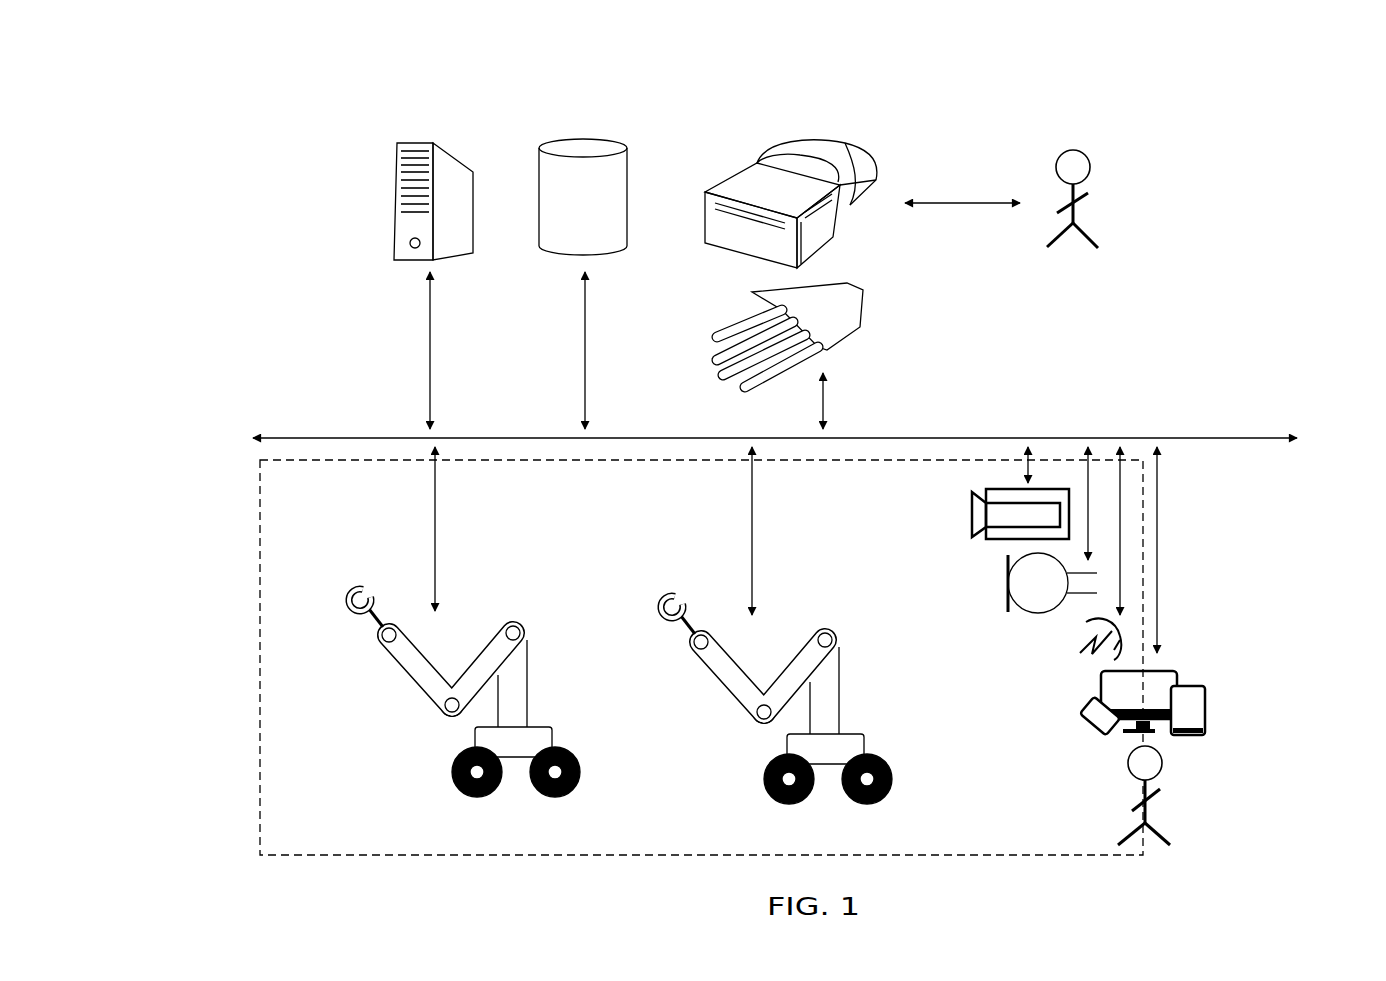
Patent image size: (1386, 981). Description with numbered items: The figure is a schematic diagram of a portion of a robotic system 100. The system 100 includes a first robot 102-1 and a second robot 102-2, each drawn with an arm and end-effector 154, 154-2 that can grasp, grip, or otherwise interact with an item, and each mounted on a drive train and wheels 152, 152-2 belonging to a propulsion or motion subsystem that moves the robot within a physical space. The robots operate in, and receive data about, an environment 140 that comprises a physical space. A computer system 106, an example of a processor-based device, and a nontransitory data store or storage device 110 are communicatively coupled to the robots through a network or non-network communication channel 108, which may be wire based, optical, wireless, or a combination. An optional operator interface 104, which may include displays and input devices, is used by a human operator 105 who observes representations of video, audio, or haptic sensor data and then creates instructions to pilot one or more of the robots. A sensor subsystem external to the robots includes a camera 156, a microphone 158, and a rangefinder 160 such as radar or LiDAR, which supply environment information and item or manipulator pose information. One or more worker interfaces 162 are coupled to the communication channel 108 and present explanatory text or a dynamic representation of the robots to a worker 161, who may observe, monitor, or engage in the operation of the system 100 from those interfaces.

The robotic system 100 is at (238, 175).
The robot 102-1 is at (567, 553).
The robot 102-2 is at (833, 602).
The operator interface 104 is at (792, 127).
The human operator 105 is at (1072, 137).
The computer system 106 is at (430, 140).
The network or non-network communication channel 108 is at (374, 428).
The storage device 110 is at (583, 128).
The environment 140 is at (318, 826).
The drive train and wheels 152 is at (565, 722).
The second robot base with wheels 152-2 is at (884, 738).
The arm and end-effector 154 is at (339, 580).
The arm and end-effector 154-2 is at (652, 582).
The camera 156 is at (1080, 515).
The microphone 158 is at (1113, 575).
The rangefinder 160 is at (1133, 622).
The worker 161 is at (1187, 788).
The worker interface 162 is at (1218, 703).